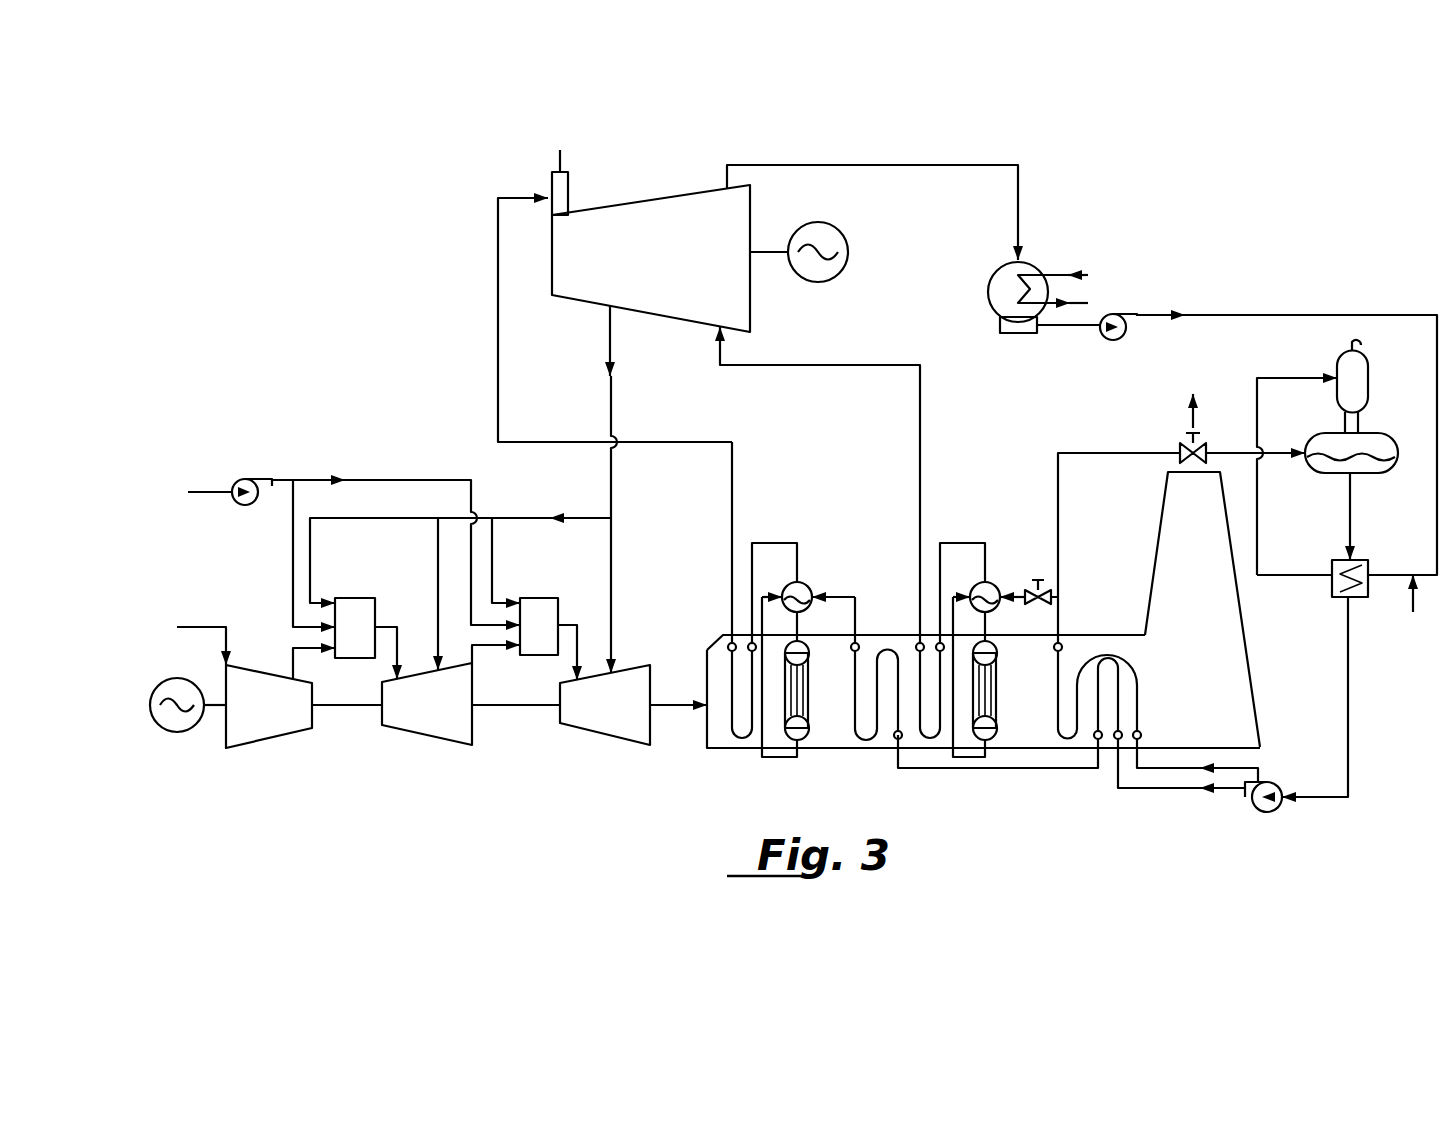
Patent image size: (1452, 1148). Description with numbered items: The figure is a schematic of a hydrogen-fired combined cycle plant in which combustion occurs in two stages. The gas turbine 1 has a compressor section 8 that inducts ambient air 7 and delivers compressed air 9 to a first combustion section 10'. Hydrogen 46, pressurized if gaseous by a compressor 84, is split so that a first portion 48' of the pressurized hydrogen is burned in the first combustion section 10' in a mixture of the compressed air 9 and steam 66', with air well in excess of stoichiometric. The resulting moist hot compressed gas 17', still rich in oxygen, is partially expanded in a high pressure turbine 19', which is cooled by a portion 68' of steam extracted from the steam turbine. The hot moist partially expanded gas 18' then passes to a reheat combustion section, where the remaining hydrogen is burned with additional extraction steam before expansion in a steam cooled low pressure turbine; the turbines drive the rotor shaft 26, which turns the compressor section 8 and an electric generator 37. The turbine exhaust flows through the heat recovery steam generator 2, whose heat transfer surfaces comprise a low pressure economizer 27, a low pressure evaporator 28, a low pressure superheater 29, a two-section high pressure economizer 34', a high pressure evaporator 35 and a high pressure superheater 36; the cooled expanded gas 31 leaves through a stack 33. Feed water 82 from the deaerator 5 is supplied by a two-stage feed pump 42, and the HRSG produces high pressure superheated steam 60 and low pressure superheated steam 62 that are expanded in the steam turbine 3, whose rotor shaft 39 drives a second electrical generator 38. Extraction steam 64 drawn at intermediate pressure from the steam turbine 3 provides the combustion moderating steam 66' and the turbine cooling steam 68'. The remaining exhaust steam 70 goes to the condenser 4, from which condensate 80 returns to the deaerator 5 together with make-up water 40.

The gas turbine 1 is at (328, 750).
The heat recovery steam generator 2 is at (843, 765).
The steam turbine 3 is at (641, 198).
The condenser 4 is at (997, 271).
The deaerator 5 is at (1382, 438).
The ambient air 7 is at (200, 627).
The compressor section 8 is at (263, 737).
The compressed air 9 is at (293, 662).
The first combustion section 10' is at (373, 602).
The moist hot compressed gas 17' is at (402, 631).
The hot moist partially expanded gas 18' is at (496, 668).
The high pressure turbine 19' is at (425, 721).
The rotor shaft 26 is at (353, 710).
The low pressure economizer 27 is at (1137, 690).
The low pressure evaporator 28 is at (996, 706).
The low pressure superheater 29 is at (937, 749).
The cooled expanded gas 31 is at (1192, 416).
The stack 33 is at (1246, 635).
The high pressure economizer section 34' is at (1071, 723).
The high pressure evaporator 35 is at (809, 708).
The high pressure superheater 36 is at (734, 738).
The electric generator 37 is at (185, 731).
The second electrical generator 38 is at (838, 238).
The rotor shaft 39 is at (768, 252).
The make-up water 40 is at (1412, 604).
The two-stage feed pump 42 is at (1275, 784).
The hydrogen 46 is at (204, 492).
The first portion of pressurized hydrogen 48' is at (291, 553).
The high pressure superheated steam 60 is at (732, 483).
The low pressure superheated steam 62 is at (920, 420).
The extraction steam 64 is at (612, 361).
The steam 66' is at (460, 560).
The cooling steam 68' is at (454, 594).
The exhaust steam 70 is at (904, 165).
The condensate 80 is at (1211, 314).
The feed water 82 is at (1349, 735).
The compressor 84 is at (252, 480).